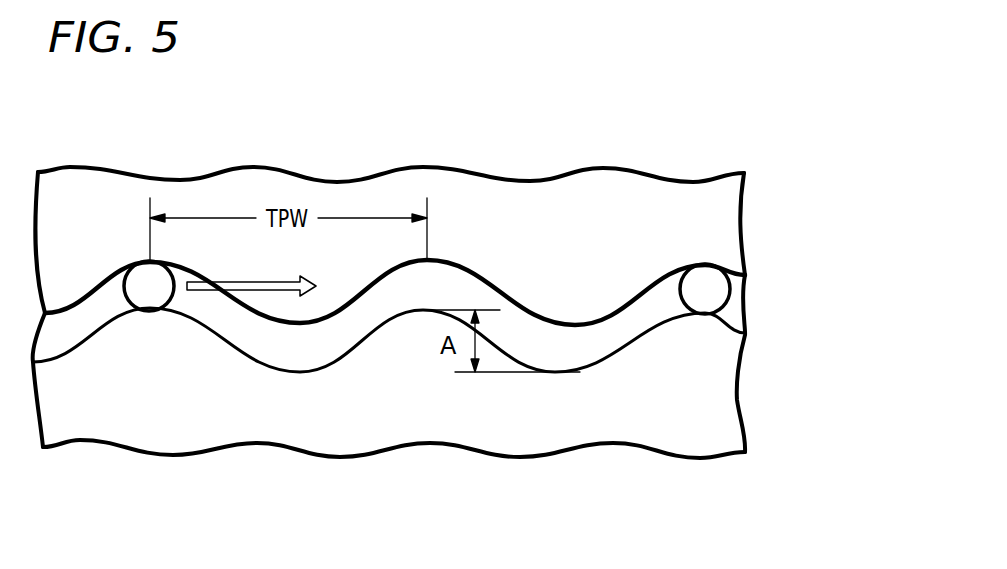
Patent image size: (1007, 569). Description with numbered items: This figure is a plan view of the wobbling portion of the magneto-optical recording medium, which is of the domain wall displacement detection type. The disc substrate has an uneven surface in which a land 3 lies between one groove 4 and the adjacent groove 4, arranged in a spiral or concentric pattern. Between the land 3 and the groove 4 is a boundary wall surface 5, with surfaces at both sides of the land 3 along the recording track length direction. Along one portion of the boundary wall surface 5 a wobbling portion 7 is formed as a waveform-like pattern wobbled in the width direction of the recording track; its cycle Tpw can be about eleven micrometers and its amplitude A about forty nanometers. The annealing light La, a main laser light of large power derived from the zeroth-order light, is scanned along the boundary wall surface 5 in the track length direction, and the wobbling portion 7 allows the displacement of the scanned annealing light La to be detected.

The land 3 is at (176, 203).
The groove 4 is at (673, 423).
The boundary wall surface 5 is at (232, 328).
The wobbling portion 7 is at (425, 262).
The annealing light La is at (148, 296).